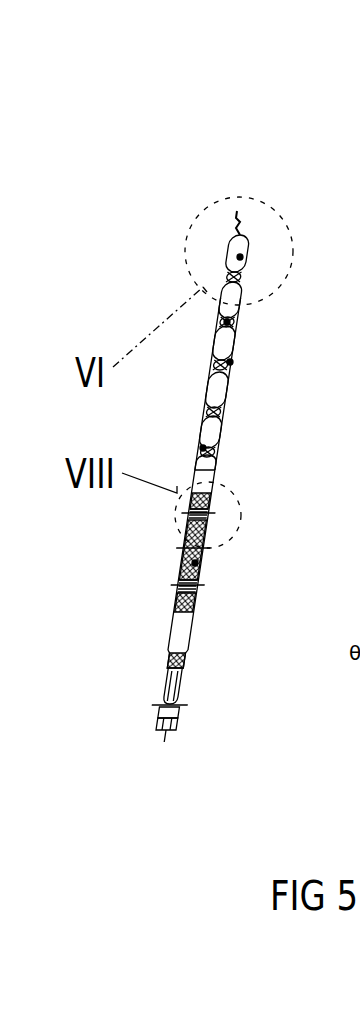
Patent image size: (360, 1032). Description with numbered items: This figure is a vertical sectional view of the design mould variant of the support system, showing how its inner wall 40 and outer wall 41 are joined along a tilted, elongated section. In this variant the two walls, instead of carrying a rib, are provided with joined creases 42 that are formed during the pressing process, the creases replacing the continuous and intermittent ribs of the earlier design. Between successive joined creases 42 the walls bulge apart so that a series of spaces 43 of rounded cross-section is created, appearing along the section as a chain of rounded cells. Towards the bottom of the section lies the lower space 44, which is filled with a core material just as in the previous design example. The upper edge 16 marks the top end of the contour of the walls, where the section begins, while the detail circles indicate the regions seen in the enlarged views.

The upper edge 16 is at (237, 213).
The inner wall 40 is at (230, 362).
The outer wall 41 is at (203, 448).
The joined creases 42 is at (227, 322).
The spaces 43 is at (240, 257).
The lower space 44 is at (195, 563).